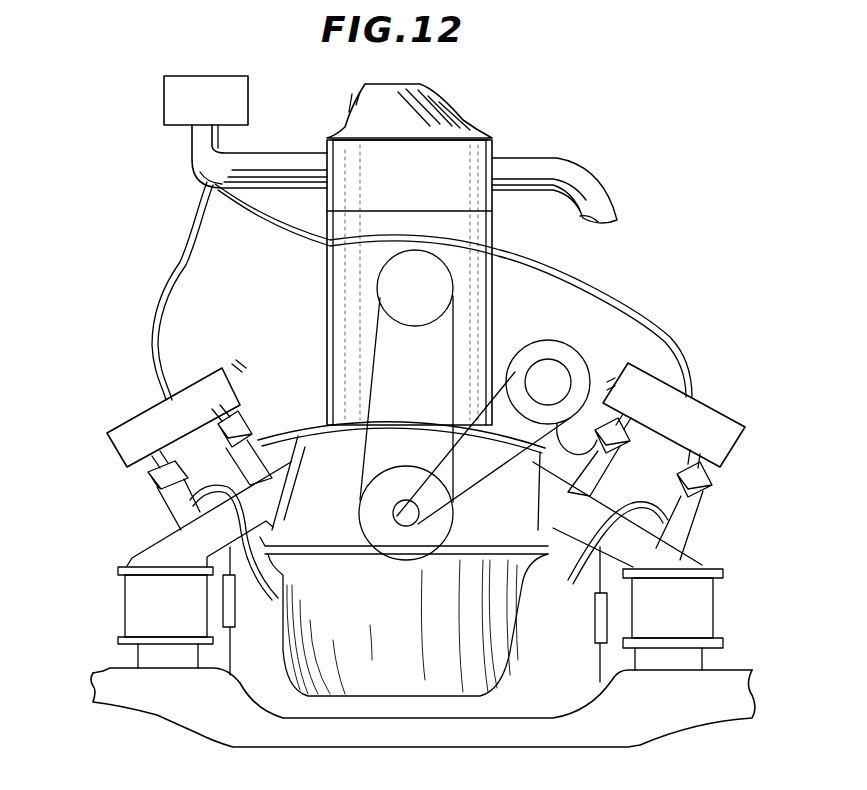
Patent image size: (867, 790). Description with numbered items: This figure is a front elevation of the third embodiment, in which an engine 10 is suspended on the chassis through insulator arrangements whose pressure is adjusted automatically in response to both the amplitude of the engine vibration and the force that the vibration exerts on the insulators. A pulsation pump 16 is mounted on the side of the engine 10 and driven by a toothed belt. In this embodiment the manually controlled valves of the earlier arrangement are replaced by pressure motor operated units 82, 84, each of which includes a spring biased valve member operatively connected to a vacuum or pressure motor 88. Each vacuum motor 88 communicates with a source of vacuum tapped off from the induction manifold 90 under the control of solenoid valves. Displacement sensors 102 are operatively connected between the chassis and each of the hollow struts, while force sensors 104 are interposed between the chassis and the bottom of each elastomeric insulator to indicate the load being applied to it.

The engine 10 is at (335, 281).
The pulsation pump 16 is at (538, 348).
The pressure motor operated unit 82 is at (258, 452).
The pressure motor operated unit 84 is at (170, 508).
The vacuum or pressure motor 88 is at (235, 452).
The induction manifold 90 is at (205, 165).
The displacement sensor 102 is at (235, 602).
The force sensor 104 is at (145, 657).